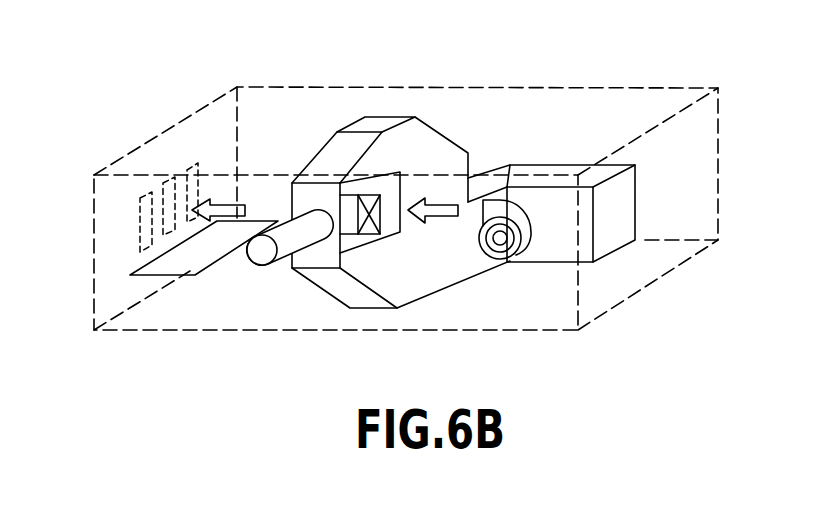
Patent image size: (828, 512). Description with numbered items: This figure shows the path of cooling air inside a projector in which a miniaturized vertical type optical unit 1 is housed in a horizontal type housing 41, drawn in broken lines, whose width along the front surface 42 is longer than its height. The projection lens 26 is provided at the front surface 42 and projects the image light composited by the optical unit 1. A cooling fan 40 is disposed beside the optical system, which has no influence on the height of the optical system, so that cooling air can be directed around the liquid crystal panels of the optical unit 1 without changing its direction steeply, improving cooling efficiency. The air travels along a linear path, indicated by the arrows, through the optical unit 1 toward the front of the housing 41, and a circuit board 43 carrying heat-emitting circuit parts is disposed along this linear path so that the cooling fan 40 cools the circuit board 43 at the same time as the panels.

The optical unit 1 is at (443, 115).
The projection lens 26 is at (285, 243).
The cooling fan 40 is at (521, 244).
The horizontal type housing 41 is at (600, 103).
The front surface 42 is at (108, 243).
The circuit board 43 is at (202, 258).